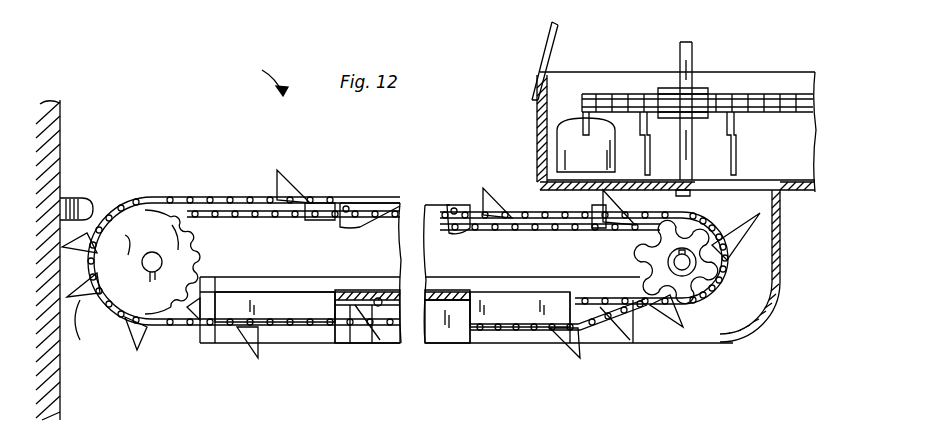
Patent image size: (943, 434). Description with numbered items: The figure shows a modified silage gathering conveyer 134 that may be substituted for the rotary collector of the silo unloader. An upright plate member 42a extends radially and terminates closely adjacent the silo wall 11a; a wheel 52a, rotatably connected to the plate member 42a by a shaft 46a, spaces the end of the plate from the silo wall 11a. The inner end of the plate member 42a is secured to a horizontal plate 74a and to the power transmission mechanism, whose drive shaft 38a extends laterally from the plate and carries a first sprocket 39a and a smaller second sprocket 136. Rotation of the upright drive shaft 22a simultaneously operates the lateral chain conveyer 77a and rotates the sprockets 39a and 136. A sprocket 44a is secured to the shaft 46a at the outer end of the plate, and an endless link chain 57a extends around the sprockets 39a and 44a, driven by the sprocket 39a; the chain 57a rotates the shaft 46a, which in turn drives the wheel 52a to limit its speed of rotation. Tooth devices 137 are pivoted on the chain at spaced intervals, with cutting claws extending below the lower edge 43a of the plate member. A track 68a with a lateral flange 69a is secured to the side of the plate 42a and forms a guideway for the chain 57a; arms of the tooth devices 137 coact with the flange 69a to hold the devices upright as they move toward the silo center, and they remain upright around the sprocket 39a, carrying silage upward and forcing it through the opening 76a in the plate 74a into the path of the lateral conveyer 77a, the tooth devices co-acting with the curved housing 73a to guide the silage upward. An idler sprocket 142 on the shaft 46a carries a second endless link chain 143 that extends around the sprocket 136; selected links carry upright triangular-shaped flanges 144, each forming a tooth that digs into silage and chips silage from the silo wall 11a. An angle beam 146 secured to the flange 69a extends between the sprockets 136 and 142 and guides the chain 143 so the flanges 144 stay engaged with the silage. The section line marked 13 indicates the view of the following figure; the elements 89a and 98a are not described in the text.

The silo wall 11a is at (55, 138).
The wheel 52a is at (71, 200).
The modified silage gathering conveyer 134 is at (257, 76).
The section line 13- 13 is at (305, 137).
The triangular-shaped flanges 144 is at (286, 193).
The endless link chain 143 is at (316, 201).
The tooth devices 137 is at (380, 205).
The sprocket 44a is at (200, 256).
The angle beam 146 is at (268, 297).
The upright plate member 42a is at (401, 247).
The hopper 89a is at (550, 133).
The hopper insert 98a is at (563, 158).
The endless link chain 57a is at (442, 212).
The upright drive shaft 22a is at (686, 44).
The chain conveyer 77a is at (760, 96).
The opening 76a is at (750, 182).
The horizontal plate 74a is at (796, 195).
The curved housing 73a is at (785, 258).
The lateral flange 69a is at (447, 300).
The track 68a is at (500, 285).
The first sprocket 39a is at (640, 253).
The second sprocket 136 is at (655, 265).
The drive shaft 38a is at (690, 266).
The shaft 46a is at (148, 266).
The idler sprocket 142 is at (157, 292).
The lower edge 43a is at (440, 345).